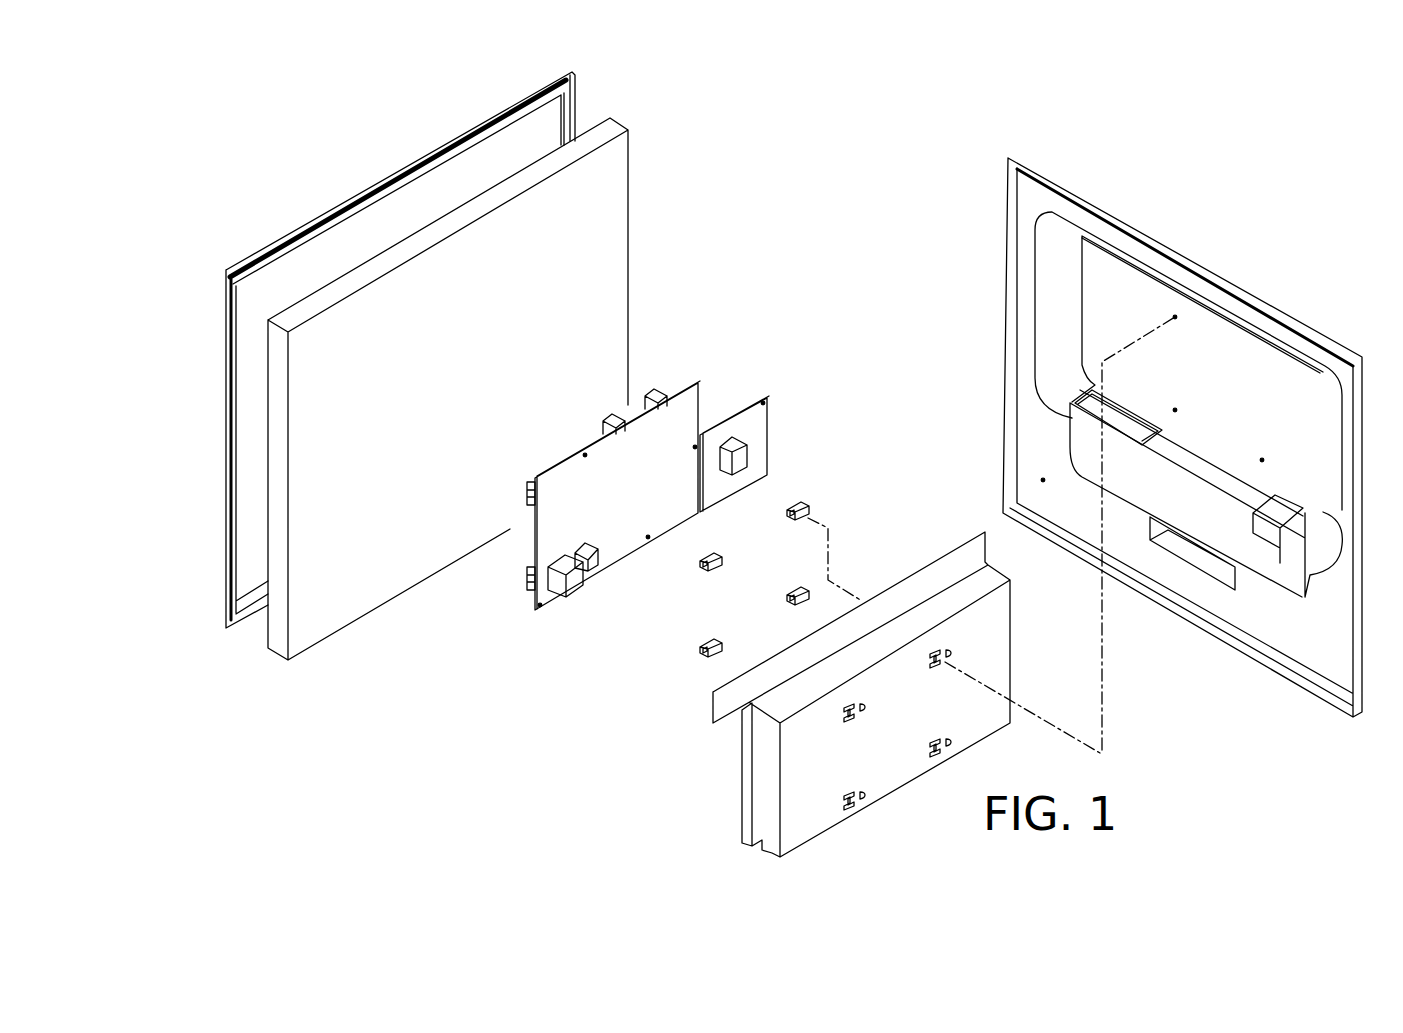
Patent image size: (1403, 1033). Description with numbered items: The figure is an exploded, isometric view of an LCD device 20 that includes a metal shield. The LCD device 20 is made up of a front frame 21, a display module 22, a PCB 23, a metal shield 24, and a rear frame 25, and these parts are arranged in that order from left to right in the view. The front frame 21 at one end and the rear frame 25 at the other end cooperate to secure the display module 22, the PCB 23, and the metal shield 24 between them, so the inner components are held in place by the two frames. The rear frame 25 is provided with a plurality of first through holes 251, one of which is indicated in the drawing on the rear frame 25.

The LCD device 20 is at (770, 131).
The front frame 21 is at (577, 110).
The display module 22 is at (620, 177).
The PCB 23 is at (755, 432).
The metal shield 24 is at (750, 857).
The rear frame 25 is at (1230, 249).
The first through holes 251 is at (1262, 368).